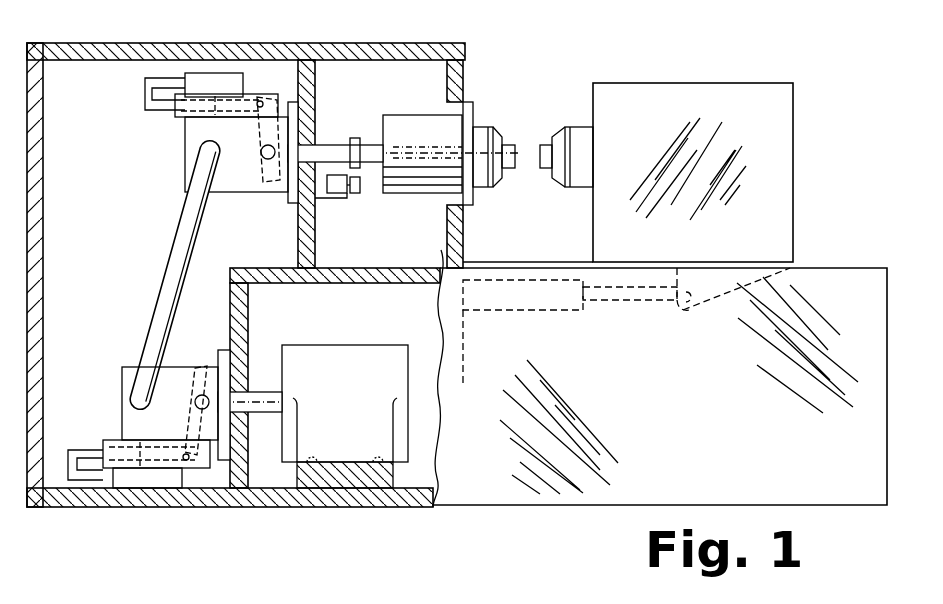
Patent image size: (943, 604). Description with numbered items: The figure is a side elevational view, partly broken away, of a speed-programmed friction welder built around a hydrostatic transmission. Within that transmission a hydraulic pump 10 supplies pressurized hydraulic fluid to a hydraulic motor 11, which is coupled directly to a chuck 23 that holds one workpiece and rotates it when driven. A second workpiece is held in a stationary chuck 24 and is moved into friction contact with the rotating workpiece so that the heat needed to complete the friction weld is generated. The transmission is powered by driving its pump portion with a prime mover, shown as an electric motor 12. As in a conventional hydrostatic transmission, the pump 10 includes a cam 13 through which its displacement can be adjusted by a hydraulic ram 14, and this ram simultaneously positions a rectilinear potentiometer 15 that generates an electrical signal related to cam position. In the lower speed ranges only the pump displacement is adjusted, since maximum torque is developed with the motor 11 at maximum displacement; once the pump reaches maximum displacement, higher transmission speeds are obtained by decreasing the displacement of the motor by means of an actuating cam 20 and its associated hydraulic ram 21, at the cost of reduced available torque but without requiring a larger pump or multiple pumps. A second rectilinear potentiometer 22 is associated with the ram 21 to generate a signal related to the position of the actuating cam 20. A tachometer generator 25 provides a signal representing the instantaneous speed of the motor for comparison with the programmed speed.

The hydraulic pump 10 is at (134, 366).
The hydraulic motor 11 is at (190, 145).
The electric motor 12 is at (326, 345).
The cam 13 is at (198, 365).
The hydraulic ram 14 is at (112, 440).
The rectilinear potentiometer 15 is at (150, 480).
The actuating cam 20 is at (266, 185).
The hydraulic ram 21 is at (176, 118).
The second rectilinear potentiometer 22 is at (197, 72).
The chuck 23 is at (496, 126).
The stationary chuck 24 is at (558, 140).
The tachometer generator 25 is at (342, 188).